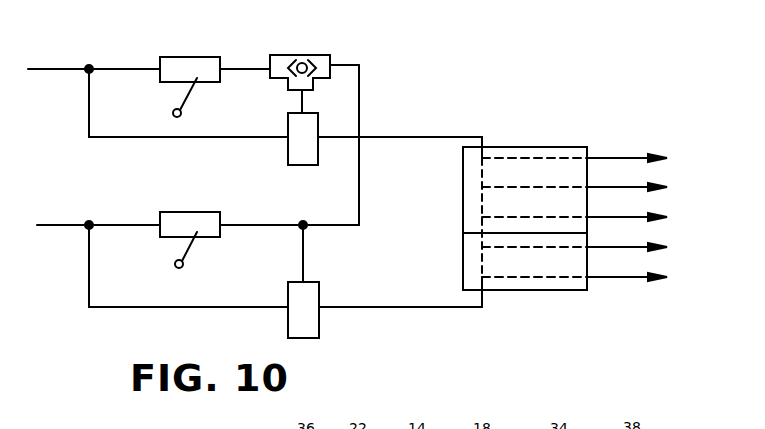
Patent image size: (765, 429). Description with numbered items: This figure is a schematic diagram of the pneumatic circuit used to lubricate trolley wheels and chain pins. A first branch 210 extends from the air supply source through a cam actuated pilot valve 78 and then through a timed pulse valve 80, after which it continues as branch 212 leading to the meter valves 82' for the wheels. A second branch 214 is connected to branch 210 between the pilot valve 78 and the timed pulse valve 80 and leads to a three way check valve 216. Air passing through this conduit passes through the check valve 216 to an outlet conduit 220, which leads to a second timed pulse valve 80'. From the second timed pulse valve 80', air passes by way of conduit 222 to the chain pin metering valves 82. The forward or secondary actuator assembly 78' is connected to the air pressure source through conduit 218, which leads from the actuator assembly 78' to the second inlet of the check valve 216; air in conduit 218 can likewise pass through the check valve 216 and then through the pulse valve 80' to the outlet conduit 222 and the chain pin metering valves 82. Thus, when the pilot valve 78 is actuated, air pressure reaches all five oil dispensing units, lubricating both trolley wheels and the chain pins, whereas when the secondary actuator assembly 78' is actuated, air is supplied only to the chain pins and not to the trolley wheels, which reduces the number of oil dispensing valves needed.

The conduit 218 is at (118, 67).
The forward or secondary actuator assembly 78' is at (196, 67).
The three way check valve 216 is at (322, 53).
The outlet conduit 220 is at (300, 105).
The second timed pulse valve 80' is at (320, 129).
The conduit 222 is at (405, 135).
The second branch 214 is at (362, 192).
The first branch 210 is at (122, 222).
The cam actuated pilot valve 78 is at (190, 221).
The timed pulse valve 80 is at (324, 301).
The branch 212 is at (385, 309).
The chain pin metering valves 82 is at (565, 194).
The meter valves 82' is at (574, 287).